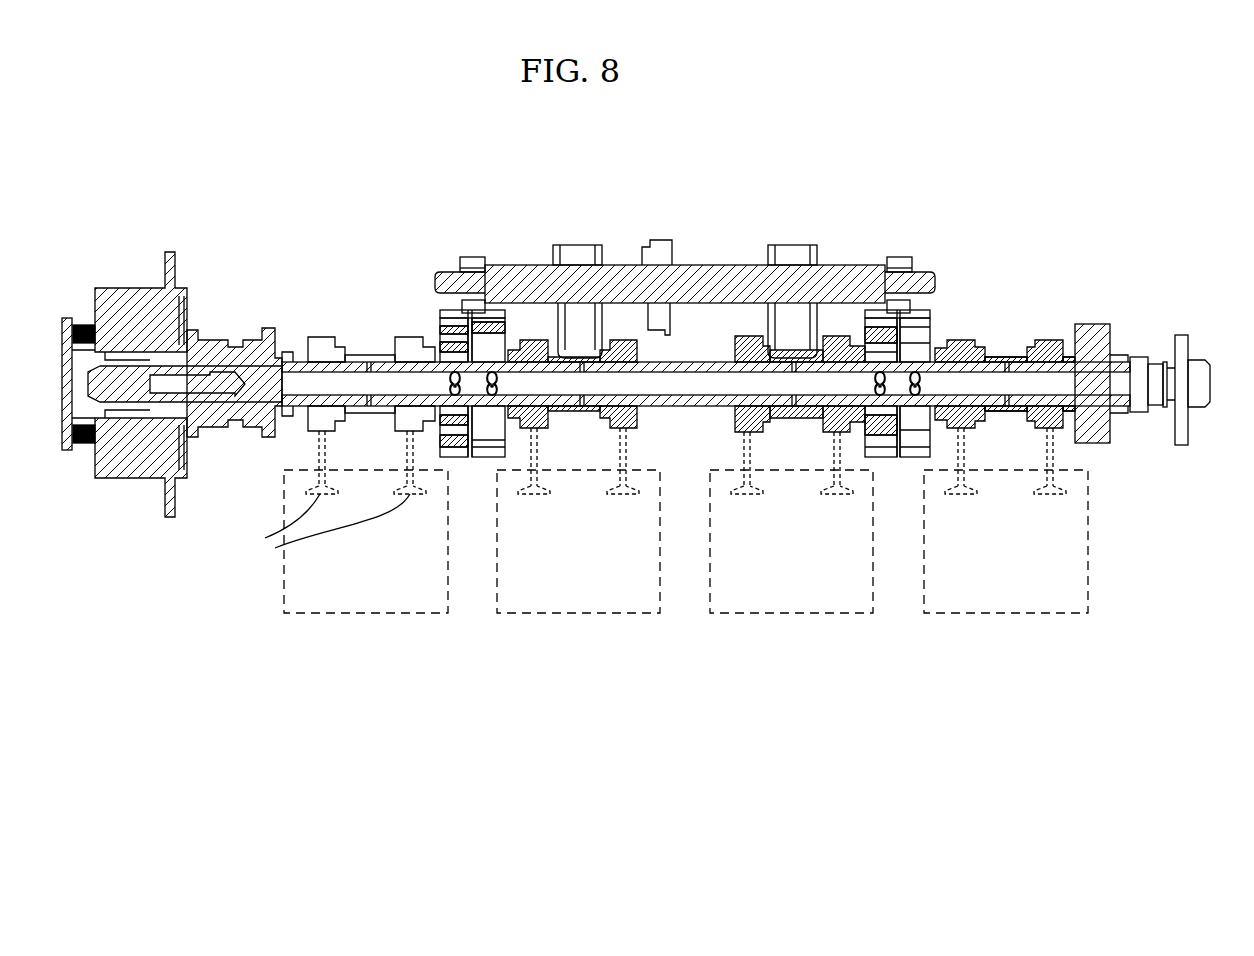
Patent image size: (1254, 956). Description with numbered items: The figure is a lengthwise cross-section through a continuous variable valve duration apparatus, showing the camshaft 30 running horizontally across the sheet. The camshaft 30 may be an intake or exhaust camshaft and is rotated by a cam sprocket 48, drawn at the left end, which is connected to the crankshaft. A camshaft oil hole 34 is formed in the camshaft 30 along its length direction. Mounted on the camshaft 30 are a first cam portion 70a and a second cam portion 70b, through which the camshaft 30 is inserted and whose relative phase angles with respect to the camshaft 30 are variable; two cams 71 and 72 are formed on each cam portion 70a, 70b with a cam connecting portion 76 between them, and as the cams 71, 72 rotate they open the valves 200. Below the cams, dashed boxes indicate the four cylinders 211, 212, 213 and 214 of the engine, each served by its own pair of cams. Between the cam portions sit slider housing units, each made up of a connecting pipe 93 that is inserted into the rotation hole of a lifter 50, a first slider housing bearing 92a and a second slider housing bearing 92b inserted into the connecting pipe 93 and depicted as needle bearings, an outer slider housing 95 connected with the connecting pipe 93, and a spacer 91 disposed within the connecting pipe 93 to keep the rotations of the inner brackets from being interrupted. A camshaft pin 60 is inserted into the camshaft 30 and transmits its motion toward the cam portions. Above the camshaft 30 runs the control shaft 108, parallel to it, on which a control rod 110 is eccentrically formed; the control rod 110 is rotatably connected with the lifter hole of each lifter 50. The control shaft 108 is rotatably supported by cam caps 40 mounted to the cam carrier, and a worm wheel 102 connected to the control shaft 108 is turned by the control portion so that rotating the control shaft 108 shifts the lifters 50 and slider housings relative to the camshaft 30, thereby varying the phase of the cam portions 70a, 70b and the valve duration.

The camshaft 30 is at (1052, 362).
The camshaft oil hole 34 is at (1105, 385).
The cam cap 40 is at (578, 245).
The cam sprocket 48 is at (170, 520).
The lifter 50 is at (472, 257).
The camshaft pin 60 is at (455, 372).
The first cam portion 70a is at (367, 322).
The second cam portion 70b is at (654, 422).
The cam 71 is at (322, 337).
The cam 72 is at (405, 337).
The cam connecting portion 76 is at (588, 411).
The spacer 91 is at (492, 372).
The first slider housing bearing 92a is at (448, 320).
The second slider housing bearing 92b is at (497, 335).
The connecting pipe 93 is at (450, 310).
The outer slider housing 95 is at (932, 320).
The worm wheel 102 is at (662, 240).
The control shaft 108 is at (842, 265).
The control rod 110 is at (450, 300).
The valve 200 is at (268, 541).
The cylinder 211 is at (370, 614).
The cylinder 212 is at (582, 614).
The cylinder 213 is at (795, 614).
The cylinder 214 is at (1009, 614).